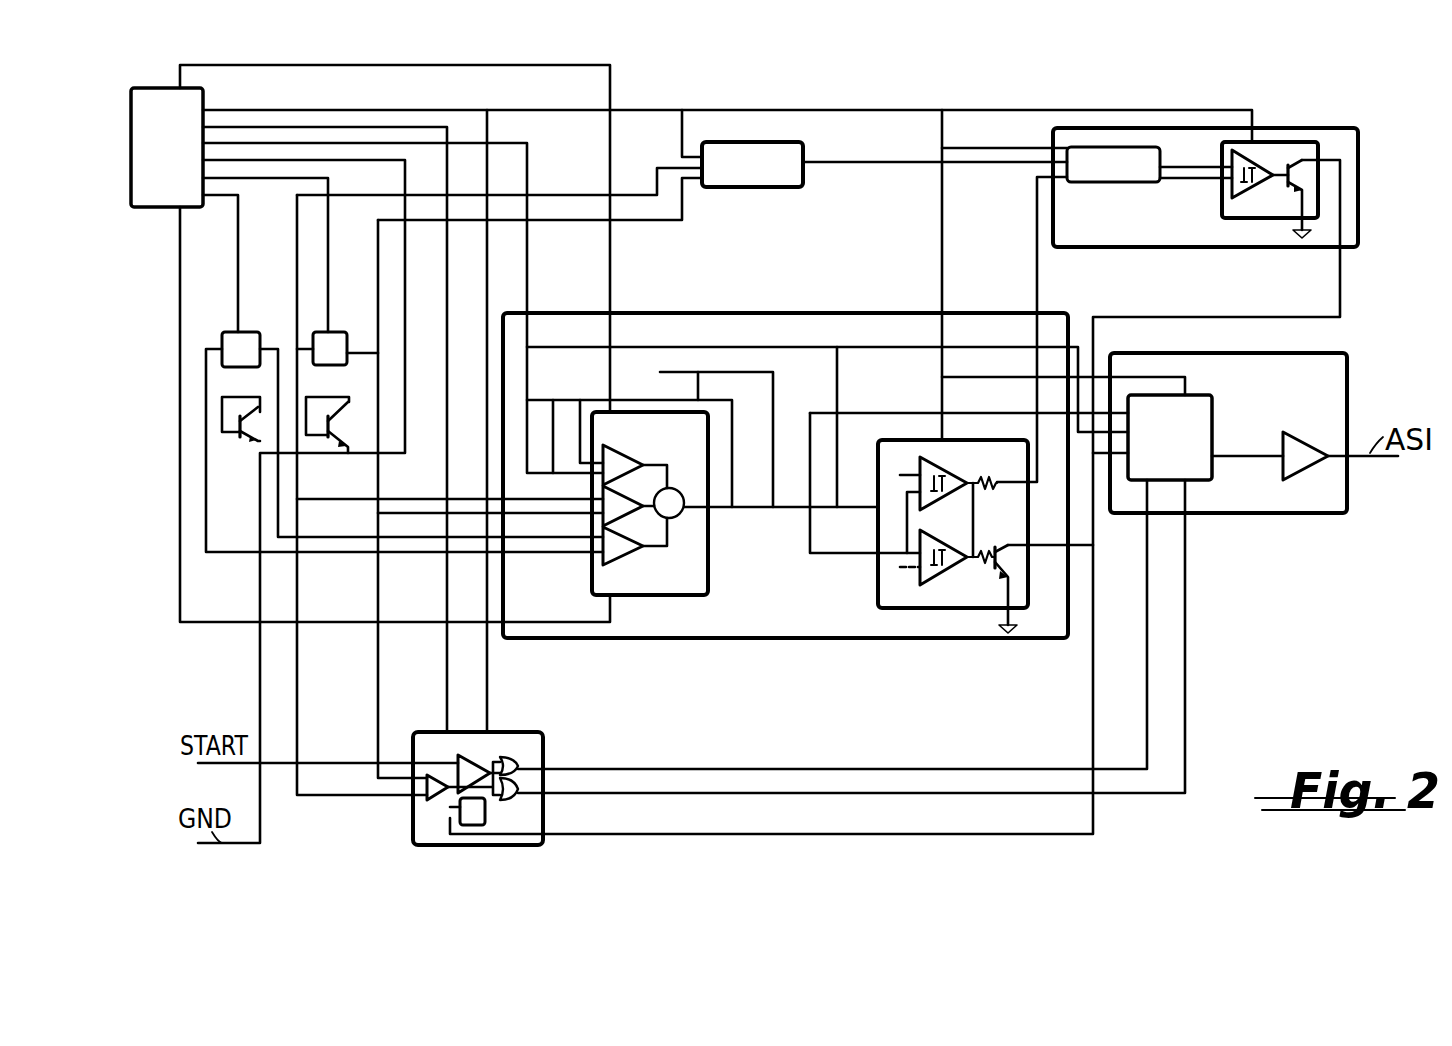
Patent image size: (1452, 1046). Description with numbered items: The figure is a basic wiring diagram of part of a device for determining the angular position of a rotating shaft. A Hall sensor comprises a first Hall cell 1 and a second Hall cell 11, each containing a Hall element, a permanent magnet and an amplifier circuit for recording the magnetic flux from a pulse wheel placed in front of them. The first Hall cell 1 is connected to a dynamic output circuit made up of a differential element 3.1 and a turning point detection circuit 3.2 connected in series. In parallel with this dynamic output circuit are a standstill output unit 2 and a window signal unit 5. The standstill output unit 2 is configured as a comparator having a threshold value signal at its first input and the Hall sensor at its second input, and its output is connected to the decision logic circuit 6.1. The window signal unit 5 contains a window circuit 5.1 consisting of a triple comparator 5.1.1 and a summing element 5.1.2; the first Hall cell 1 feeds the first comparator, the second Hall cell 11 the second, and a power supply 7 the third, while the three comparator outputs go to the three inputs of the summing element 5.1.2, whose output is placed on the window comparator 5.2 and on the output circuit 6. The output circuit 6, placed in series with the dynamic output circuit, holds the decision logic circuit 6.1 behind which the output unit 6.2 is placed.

The first Hall cell 1 is at (338, 332).
The second Hall cell 11 is at (226, 330).
The standstill output unit 2 is at (413, 816).
The differential element 3.1 is at (754, 185).
The turning point detection circuit 3.2 is at (1283, 127).
The window signal unit 5 is at (785, 498).
The window circuit 5.1 is at (674, 503).
The triple comparator 5.1.1 is at (616, 556).
The summing element 5.1.2 is at (686, 475).
The window comparator 5.2 is at (877, 573).
The output circuit 6 is at (1228, 459).
The decision logic circuit 6.1 is at (1220, 415).
The output unit 6.2 is at (1298, 433).
The power supply 7 is at (163, 200).